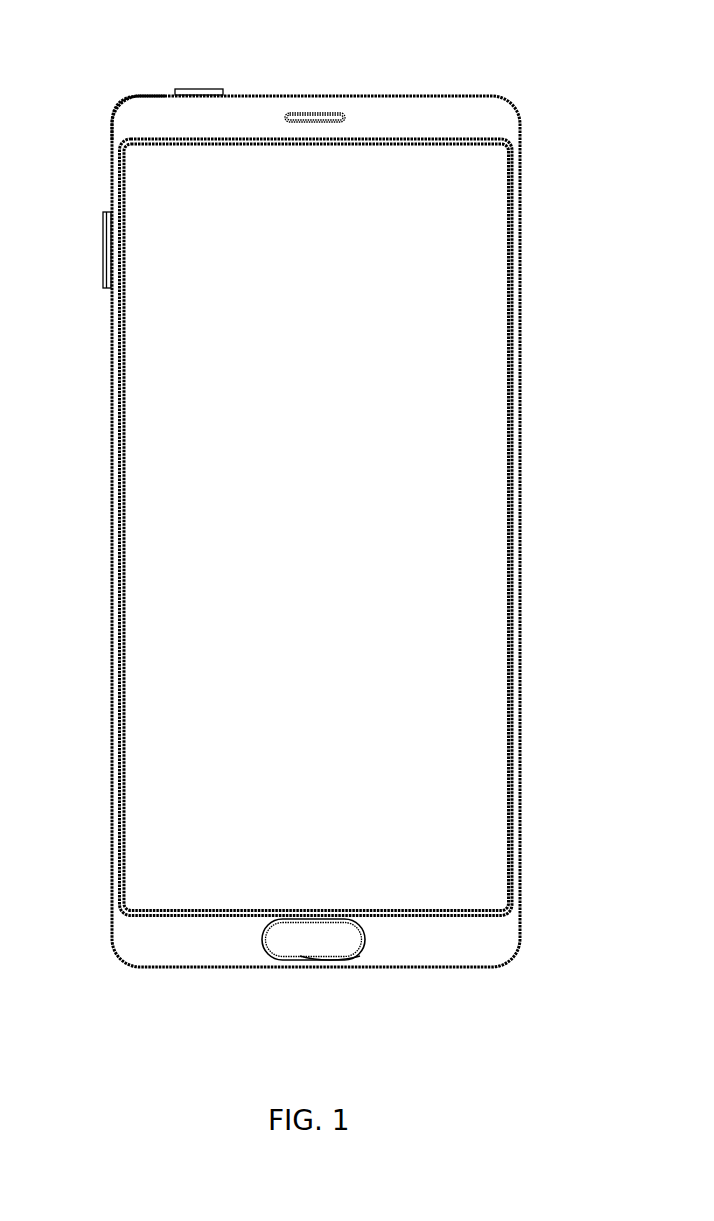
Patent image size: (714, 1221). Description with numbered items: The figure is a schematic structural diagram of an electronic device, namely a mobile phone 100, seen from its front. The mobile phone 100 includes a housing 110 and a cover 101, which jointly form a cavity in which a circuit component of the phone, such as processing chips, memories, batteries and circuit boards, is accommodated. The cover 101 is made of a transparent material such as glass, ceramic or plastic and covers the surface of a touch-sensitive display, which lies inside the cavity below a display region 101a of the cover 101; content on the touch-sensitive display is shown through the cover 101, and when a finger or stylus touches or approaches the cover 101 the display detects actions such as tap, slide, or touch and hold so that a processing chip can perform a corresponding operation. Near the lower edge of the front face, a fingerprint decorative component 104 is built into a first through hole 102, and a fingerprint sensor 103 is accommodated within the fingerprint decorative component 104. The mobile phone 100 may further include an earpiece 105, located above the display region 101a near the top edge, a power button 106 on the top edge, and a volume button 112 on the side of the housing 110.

The mobile phone 100 is at (452, 84).
The cover 101 is at (467, 113).
The display region 101a is at (473, 212).
The first through hole 102 is at (357, 958).
The fingerprint sensor 103 is at (328, 942).
The fingerprint decorative component 104 is at (288, 958).
The earpiece 105 is at (318, 113).
The power button 106 is at (200, 89).
The housing 110 is at (136, 98).
The volume button 112 is at (103, 248).